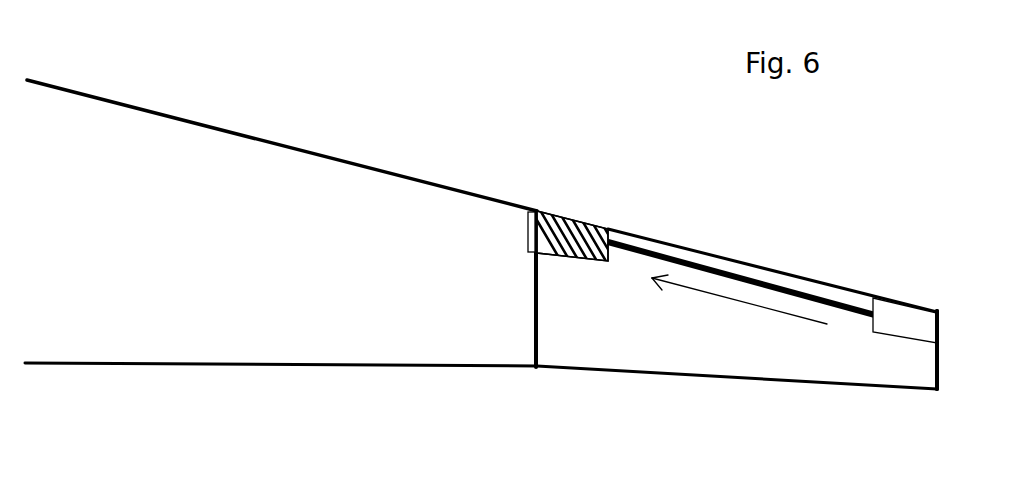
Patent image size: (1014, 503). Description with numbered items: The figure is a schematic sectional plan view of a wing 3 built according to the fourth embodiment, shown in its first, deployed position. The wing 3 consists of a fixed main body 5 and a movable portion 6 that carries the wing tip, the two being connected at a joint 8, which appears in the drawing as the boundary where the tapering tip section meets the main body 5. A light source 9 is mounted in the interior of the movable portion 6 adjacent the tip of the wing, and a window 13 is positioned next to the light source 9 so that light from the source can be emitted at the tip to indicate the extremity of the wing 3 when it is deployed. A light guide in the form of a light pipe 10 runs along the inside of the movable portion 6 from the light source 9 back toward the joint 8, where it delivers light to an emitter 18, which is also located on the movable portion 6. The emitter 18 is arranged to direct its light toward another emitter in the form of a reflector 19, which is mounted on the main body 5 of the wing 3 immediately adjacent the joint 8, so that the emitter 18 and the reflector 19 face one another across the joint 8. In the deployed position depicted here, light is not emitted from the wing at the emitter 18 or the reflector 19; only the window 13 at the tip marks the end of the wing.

The wing 3 is at (152, 278).
The main body 5 is at (113, 101).
The movable portion 6 is at (805, 383).
The joint 8 is at (537, 212).
The light source 9 is at (918, 315).
The light pipe 10 is at (751, 279).
The window 13 is at (893, 297).
The emitter 18 is at (568, 218).
The reflector 19 is at (527, 228).